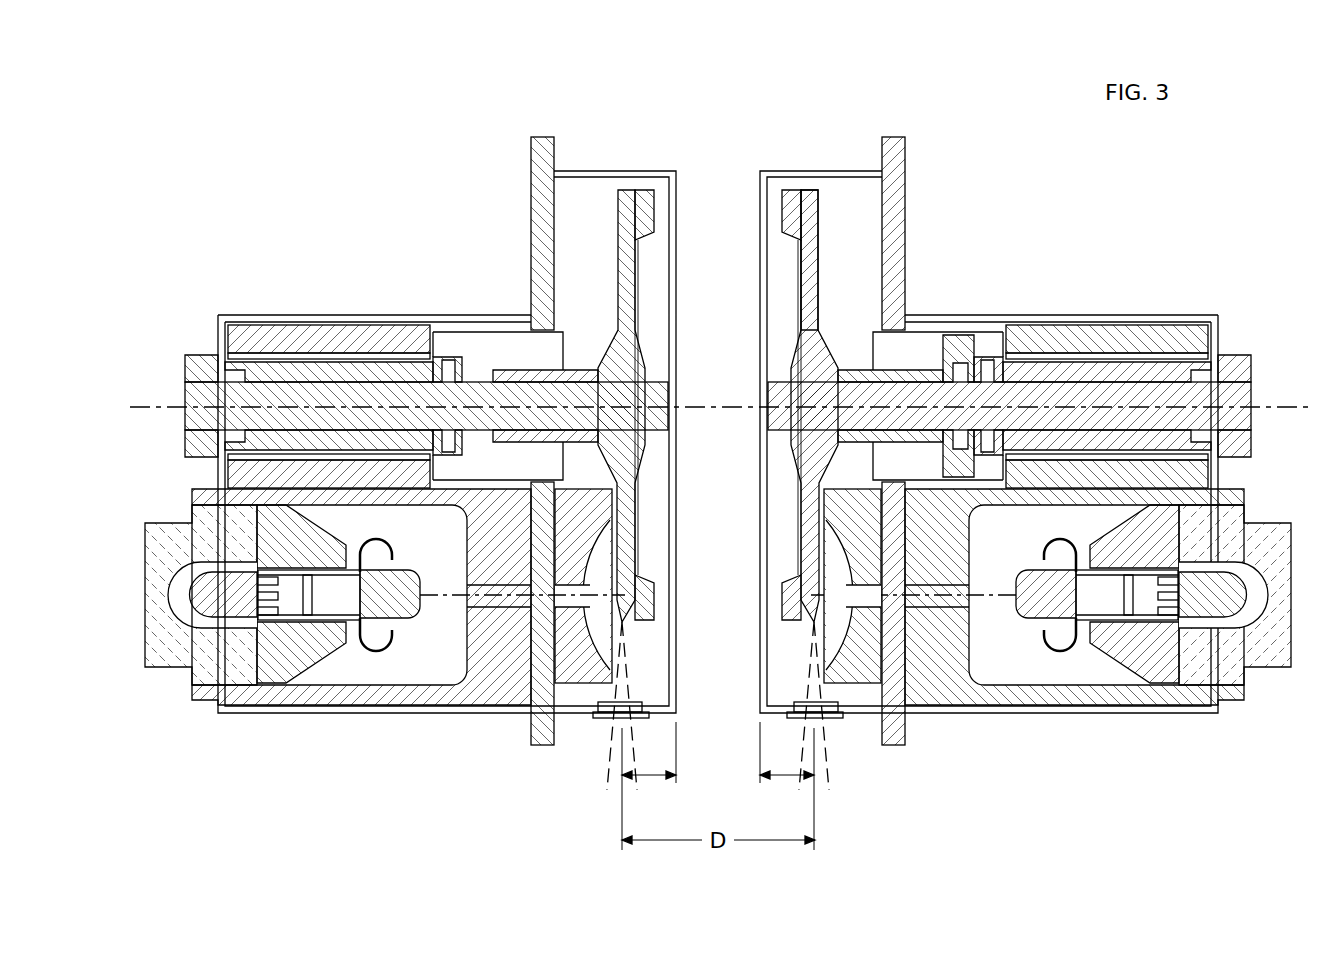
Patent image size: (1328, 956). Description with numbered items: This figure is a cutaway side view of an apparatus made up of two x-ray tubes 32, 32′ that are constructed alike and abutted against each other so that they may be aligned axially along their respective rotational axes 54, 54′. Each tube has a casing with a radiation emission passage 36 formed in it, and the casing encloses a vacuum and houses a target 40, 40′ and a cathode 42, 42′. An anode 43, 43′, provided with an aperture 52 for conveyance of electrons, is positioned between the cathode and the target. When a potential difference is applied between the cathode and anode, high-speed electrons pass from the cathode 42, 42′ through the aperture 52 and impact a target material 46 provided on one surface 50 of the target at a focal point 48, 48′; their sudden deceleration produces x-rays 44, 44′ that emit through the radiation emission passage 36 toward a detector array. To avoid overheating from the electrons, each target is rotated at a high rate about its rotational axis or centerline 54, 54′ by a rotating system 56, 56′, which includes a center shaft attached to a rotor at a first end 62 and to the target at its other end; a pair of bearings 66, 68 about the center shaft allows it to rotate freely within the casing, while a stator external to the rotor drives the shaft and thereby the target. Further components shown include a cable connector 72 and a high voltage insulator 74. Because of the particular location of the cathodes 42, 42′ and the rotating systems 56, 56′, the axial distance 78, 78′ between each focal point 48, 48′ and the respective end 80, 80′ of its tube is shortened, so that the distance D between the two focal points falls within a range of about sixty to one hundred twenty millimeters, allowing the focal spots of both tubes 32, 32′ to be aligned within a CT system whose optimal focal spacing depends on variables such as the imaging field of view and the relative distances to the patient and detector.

The x-ray tube 32 is at (838, 112).
The x-ray tube 32′ is at (597, 112).
The radiation emission passage 36 is at (845, 727).
The target 40 is at (799, 447).
The target 40′ is at (637, 452).
The cathode 42 is at (1032, 612).
The cathode 42′ is at (404, 612).
The anode 43 is at (927, 633).
The anode 43′ is at (497, 640).
The x-rays 44 is at (821, 743).
The x-rays 44′ is at (615, 743).
The target material 46 is at (808, 250).
The focal point 48 is at (808, 625).
The focal point 48′ is at (628, 625).
The surface of target 50 is at (817, 278).
The aperture 52 is at (948, 600).
The rotational axis 54 is at (1293, 407).
The rotational axis 54′ is at (143, 407).
The rotating system 56 is at (1094, 297).
The rotating system 56′ is at (346, 297).
The first end 62 is at (1250, 425).
The bearing 66 is at (963, 345).
The bearing 68 is at (1190, 355).
The cable connector 72 is at (1247, 623).
The high voltage insulator 74 is at (1157, 672).
The axial distance 78 is at (788, 778).
The axial distance 78′ is at (648, 778).
The end 80 is at (759, 205).
The end 80′ is at (676, 205).